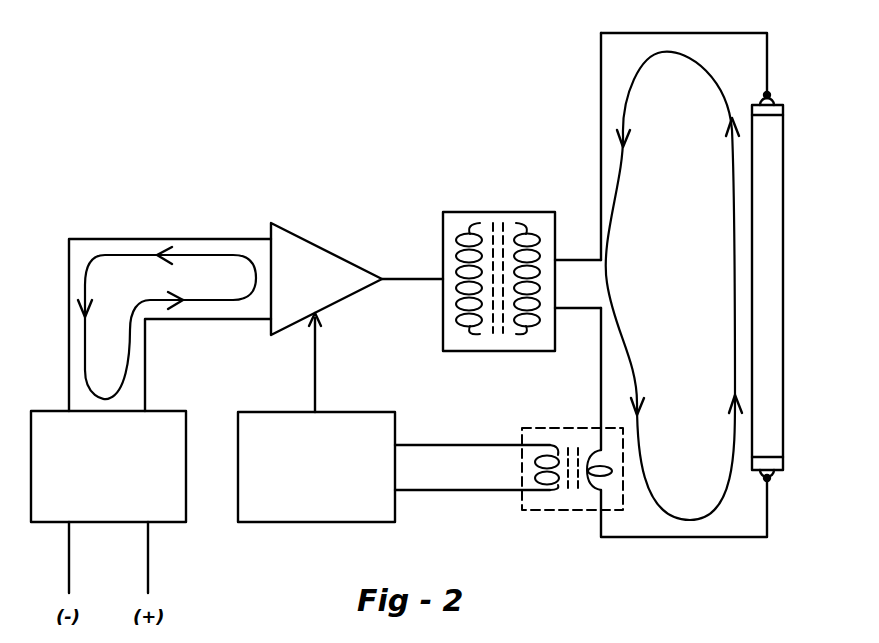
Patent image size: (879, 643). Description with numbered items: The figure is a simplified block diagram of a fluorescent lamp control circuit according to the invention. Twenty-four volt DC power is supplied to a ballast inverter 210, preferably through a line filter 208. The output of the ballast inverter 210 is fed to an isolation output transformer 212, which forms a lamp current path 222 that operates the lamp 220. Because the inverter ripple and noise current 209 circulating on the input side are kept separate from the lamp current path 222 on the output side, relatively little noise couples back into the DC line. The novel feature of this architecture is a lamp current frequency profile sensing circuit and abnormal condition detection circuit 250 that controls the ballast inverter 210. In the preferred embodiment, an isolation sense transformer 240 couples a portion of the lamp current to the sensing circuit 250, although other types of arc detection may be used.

The line filter 208 is at (108, 466).
The inverter ripple and noise current 209 is at (167, 323).
The ballast inverter 210 is at (326, 279).
The isolation output transformer 212 is at (499, 268).
The lamp 220 is at (793, 286).
The lamp current path 222 is at (674, 286).
The isolation sense transformer 240 is at (572, 483).
The lamp current frequency profile sensing circuit and abnormal condition detection 250 is at (316, 467).